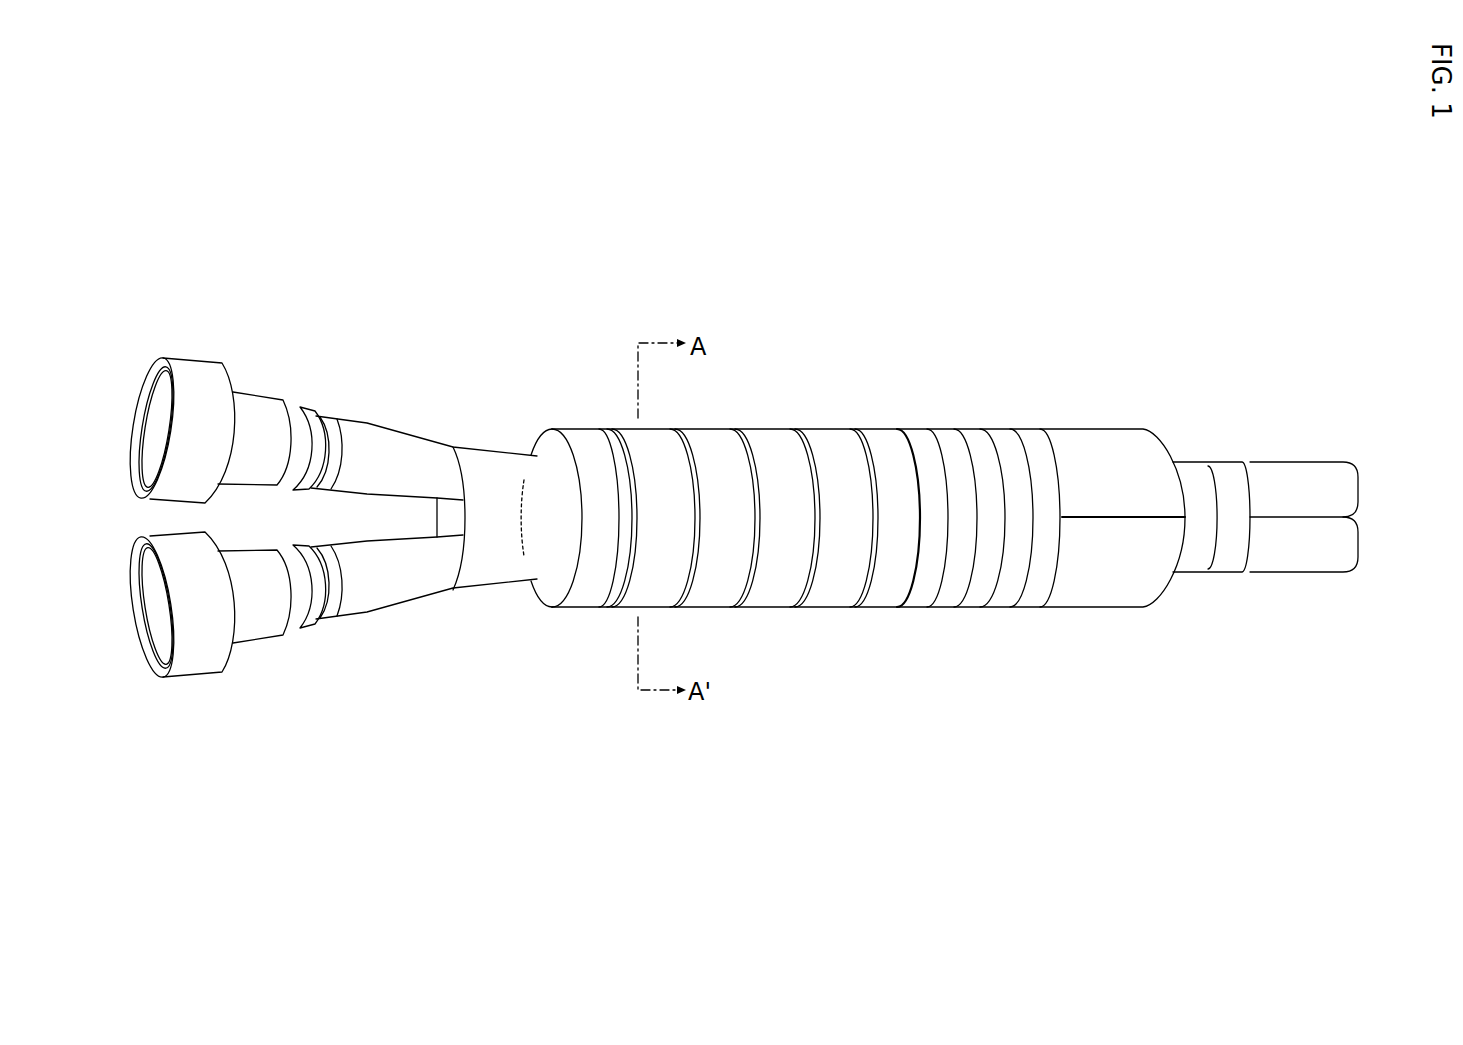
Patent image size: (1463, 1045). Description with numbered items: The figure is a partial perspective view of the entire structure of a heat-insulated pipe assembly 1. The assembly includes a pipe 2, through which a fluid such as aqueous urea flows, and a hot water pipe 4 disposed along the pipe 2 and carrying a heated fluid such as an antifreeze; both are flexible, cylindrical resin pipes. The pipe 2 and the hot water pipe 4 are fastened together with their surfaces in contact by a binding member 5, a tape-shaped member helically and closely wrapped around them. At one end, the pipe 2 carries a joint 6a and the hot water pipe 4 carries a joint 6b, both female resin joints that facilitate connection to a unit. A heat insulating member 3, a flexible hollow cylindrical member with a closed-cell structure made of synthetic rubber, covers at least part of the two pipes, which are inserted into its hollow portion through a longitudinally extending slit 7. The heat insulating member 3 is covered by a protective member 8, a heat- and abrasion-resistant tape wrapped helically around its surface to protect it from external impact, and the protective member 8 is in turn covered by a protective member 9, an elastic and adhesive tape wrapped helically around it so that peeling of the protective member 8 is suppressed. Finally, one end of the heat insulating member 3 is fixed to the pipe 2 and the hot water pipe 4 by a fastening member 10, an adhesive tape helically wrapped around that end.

The heat-insulated pipe assembly 1 is at (851, 296).
The pipe 2 is at (1288, 462).
The heat insulating member 3 is at (1094, 428).
The hot water pipe 4 is at (1290, 574).
The binding member 5 is at (1190, 574).
The joint 6a is at (195, 360).
The joint 6b is at (196, 675).
The slit 7 is at (1079, 520).
The protective member 8 is at (965, 428).
The protective member 9 is at (768, 428).
The fastening member 10 is at (522, 455).